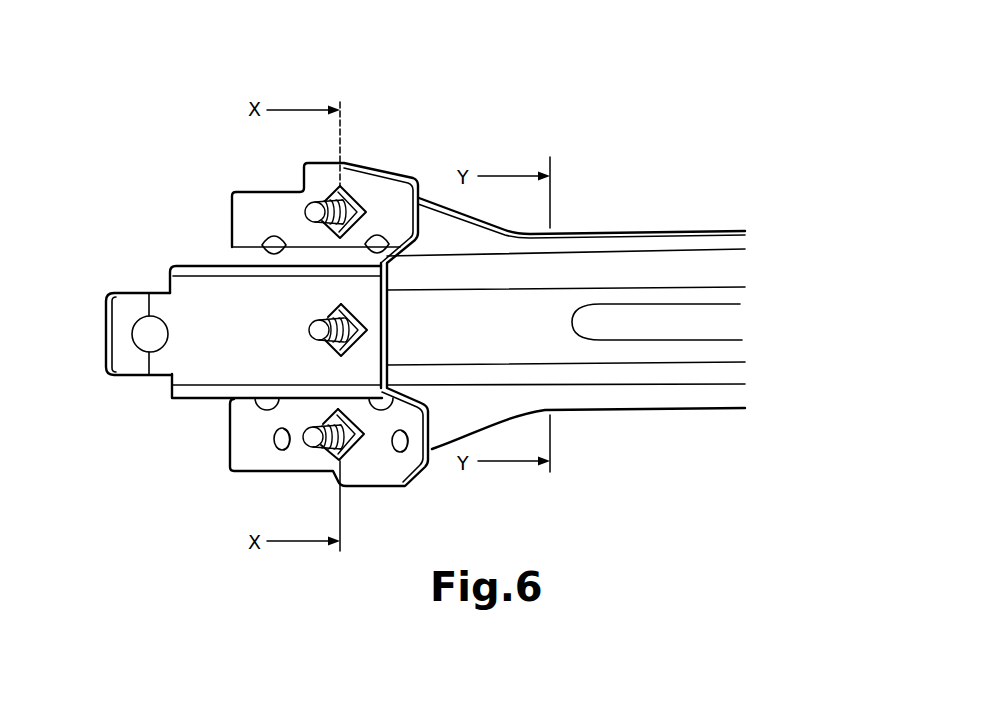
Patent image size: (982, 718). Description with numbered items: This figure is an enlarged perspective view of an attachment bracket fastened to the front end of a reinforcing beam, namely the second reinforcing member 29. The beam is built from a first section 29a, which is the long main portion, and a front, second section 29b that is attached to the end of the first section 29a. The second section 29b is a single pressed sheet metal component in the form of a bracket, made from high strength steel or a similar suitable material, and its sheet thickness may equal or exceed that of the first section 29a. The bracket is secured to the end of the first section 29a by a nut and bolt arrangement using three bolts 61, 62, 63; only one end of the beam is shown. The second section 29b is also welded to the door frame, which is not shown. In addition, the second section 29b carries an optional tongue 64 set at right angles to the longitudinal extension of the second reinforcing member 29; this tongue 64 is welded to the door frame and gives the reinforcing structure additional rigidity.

The second reinforcing member 29 is at (550, 111).
The first section 29a is at (556, 325).
The second section 29b is at (190, 367).
The bolt 61 is at (310, 214).
The bolt 62 is at (320, 330).
The bolt 63 is at (312, 440).
The tongue 64 is at (123, 300).